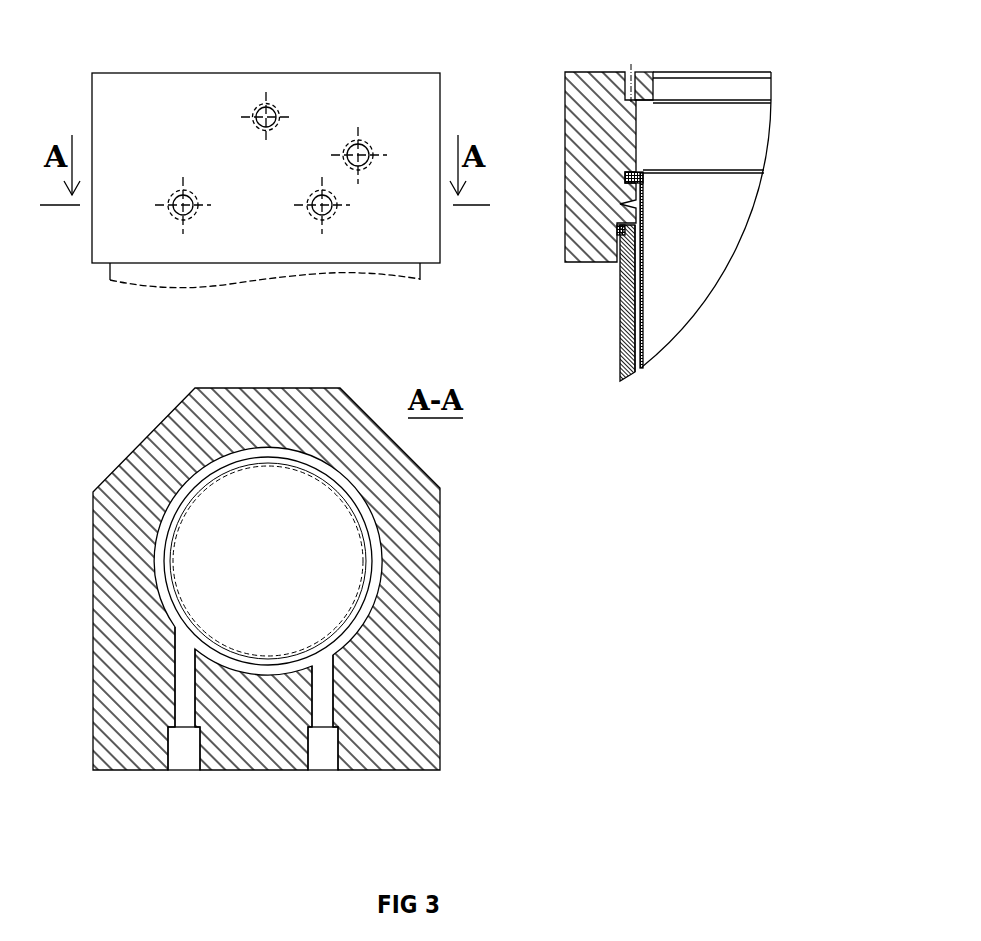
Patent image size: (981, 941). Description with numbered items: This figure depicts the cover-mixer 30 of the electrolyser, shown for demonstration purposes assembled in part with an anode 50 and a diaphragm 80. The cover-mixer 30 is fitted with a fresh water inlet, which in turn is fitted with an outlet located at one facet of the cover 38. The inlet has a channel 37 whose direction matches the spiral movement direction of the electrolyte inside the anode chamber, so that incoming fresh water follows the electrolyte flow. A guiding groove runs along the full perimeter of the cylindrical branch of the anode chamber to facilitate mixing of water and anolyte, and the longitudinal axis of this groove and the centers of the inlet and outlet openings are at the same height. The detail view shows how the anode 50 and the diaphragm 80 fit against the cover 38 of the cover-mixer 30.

The cover-mixer 30 is at (225, 240).
The channel 37 is at (323, 690).
The cover 38 is at (130, 770).
The anode 50 is at (637, 348).
The diaphragm 80 is at (645, 277).